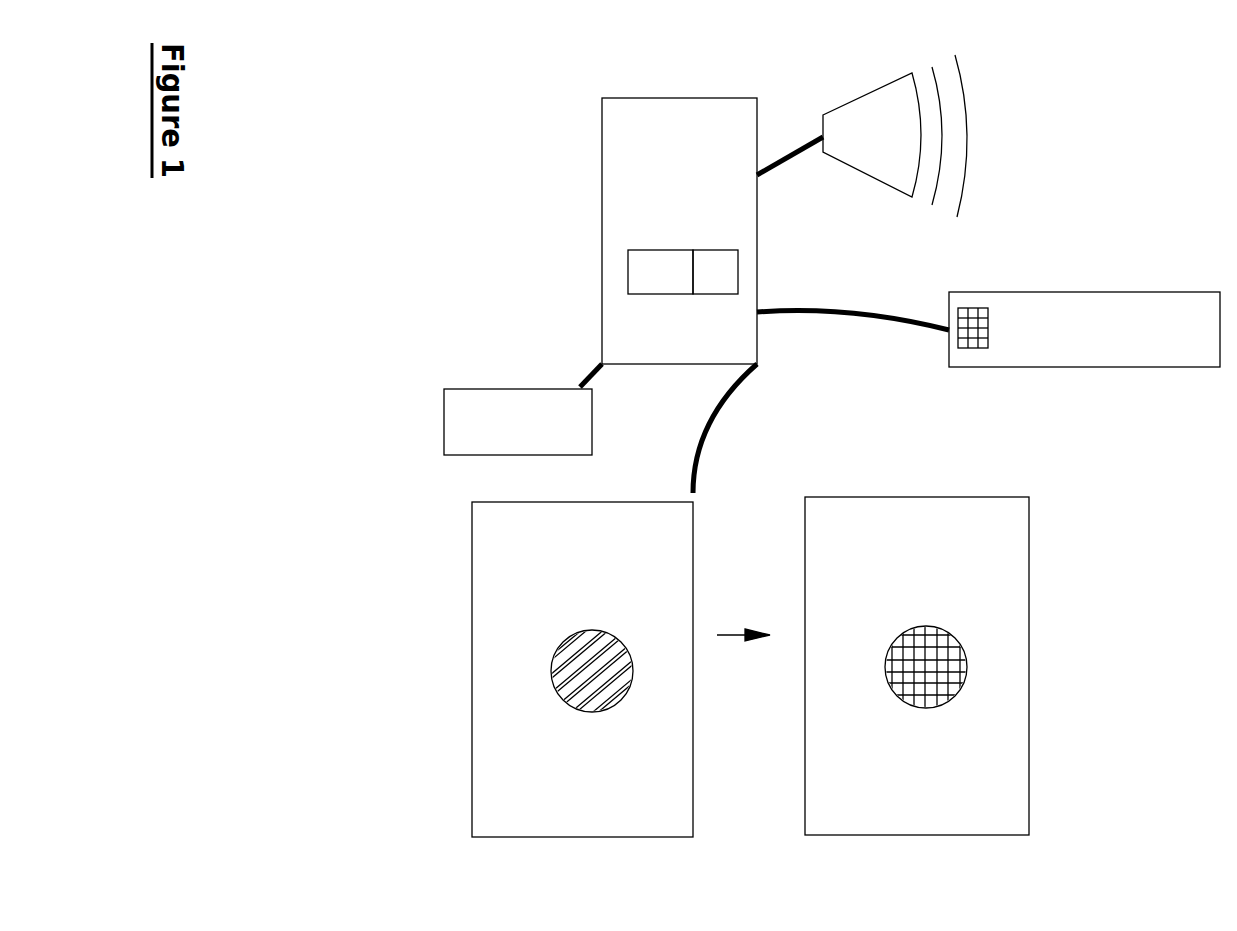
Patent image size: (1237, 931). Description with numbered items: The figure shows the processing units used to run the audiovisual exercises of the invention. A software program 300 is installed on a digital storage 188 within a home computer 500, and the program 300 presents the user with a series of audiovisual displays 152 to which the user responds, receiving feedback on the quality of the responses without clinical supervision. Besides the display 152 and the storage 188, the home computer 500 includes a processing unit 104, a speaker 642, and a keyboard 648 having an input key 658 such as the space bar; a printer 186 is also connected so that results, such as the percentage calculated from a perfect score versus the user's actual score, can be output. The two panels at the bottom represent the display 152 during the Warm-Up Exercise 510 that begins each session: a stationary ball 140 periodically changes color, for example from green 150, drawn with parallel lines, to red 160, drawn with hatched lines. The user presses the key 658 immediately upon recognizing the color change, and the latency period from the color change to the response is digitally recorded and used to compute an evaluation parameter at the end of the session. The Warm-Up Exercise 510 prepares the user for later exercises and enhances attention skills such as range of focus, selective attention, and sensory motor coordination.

The processing unit 104 is at (685, 340).
The digital storage 188 is at (640, 277).
The software program 300 is at (715, 258).
The speaker 642 is at (867, 152).
The printer 186 is at (498, 402).
The keyboard 648 is at (1102, 358).
The input key 658 is at (958, 348).
The computer 500 is at (1063, 188).
The audiovisual display 152 is at (653, 788).
The stationary ball 140 is at (565, 636).
The green color 150 is at (552, 657).
The red color 160 is at (963, 648).
The Warm-Up Exercise 510 is at (1130, 663).